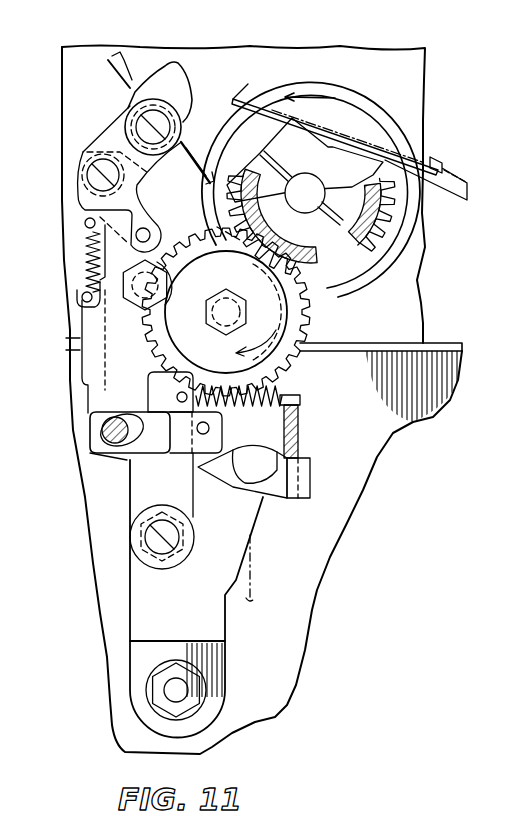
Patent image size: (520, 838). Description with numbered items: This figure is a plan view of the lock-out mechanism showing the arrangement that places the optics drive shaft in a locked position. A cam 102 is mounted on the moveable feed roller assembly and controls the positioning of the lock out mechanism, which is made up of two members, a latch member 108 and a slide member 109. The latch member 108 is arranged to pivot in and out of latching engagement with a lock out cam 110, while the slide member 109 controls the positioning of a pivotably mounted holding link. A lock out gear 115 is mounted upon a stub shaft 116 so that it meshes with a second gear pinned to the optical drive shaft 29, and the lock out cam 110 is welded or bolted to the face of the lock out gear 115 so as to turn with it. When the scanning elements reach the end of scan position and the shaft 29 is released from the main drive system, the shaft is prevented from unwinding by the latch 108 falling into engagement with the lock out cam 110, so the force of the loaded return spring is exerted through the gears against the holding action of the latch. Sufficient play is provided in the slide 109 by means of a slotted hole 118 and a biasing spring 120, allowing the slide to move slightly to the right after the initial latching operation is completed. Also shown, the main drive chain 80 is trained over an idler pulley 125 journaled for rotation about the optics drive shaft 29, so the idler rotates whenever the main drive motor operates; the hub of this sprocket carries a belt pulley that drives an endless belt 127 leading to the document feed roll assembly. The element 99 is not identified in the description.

The cam 102 is at (178, 80).
The endless belt 127 is at (244, 92).
The wheel 99 is at (343, 125).
The main drive chain 80 is at (464, 183).
The idler pulley 125 is at (395, 238).
The optical drive shaft 29 is at (313, 233).
The stub shaft 116 is at (270, 266).
The lock out cam 110 is at (275, 318).
The lock out gear 115 is at (287, 363).
The biasing spring 120 is at (80, 256).
The slotted hole 118 is at (138, 422).
The latch member 108 is at (90, 412).
The slide member 109 is at (127, 495).